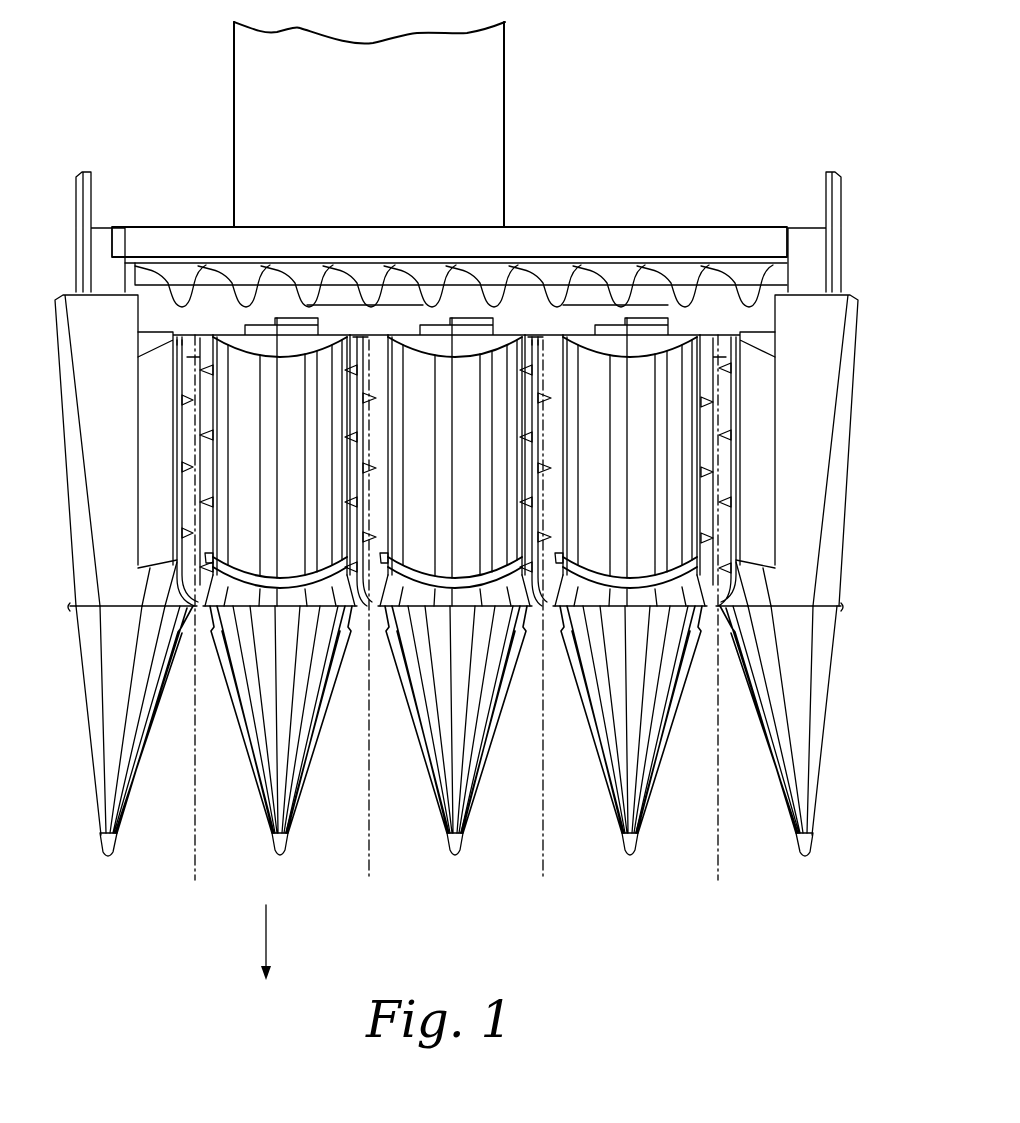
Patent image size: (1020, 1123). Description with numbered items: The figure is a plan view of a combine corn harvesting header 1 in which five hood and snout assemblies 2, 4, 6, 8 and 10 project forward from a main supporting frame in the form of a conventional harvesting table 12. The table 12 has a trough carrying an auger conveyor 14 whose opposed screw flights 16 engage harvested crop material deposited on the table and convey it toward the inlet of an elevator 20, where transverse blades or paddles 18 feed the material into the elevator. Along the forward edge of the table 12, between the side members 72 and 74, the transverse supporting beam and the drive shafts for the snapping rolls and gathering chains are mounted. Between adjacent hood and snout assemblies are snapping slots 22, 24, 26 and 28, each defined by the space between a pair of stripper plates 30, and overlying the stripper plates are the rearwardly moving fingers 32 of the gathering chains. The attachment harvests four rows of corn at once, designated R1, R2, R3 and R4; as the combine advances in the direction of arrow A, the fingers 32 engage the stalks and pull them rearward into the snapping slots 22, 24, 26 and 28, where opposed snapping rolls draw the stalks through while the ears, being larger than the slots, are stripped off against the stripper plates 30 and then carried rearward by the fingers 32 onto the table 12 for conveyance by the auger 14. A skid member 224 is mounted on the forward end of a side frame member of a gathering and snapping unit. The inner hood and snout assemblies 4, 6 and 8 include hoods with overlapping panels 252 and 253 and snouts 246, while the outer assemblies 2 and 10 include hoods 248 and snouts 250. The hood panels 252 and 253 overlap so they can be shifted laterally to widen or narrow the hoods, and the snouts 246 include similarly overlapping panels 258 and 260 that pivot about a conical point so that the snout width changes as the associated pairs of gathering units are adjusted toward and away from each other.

The combine corn harvesting header 1 is at (618, 187).
The hood and snout assembly 2 is at (91, 781).
The hood and snout assembly 4 is at (456, 575).
The hood and snout assembly 6 is at (436, 789).
The hood and snout assembly 8 is at (609, 789).
The hood and snout assembly 10 is at (804, 575).
The harvesting table 12 is at (698, 240).
The auger conveyor 14 is at (630, 272).
The screw flights 16 is at (560, 295).
The transverse blades or paddles 18 is at (380, 295).
The elevator 20 is at (488, 60).
The snapping slot 22 is at (455, 469).
The snapping slot 24 is at (368, 453).
The snapping slot 26 is at (538, 455).
The snapping slot 28 is at (718, 457).
The stripper plates 30 is at (203, 342).
The gathering chain fingers 32 is at (180, 407).
The side member 72 is at (838, 220).
The side member 74 is at (82, 207).
The skid member 224 is at (290, 341).
The snout 246 is at (252, 755).
The hood 248 is at (829, 566).
The snout 250 is at (821, 778).
The hood panel 252 is at (292, 471).
The hood panel 253 is at (240, 517).
The snout panel 258 is at (290, 731).
The snout panel 260 is at (260, 707).
The corn row R1 is at (195, 857).
The corn row R2 is at (369, 857).
The corn row R3 is at (543, 857).
The corn row R4 is at (718, 857).
The direction of advance A is at (266, 940).